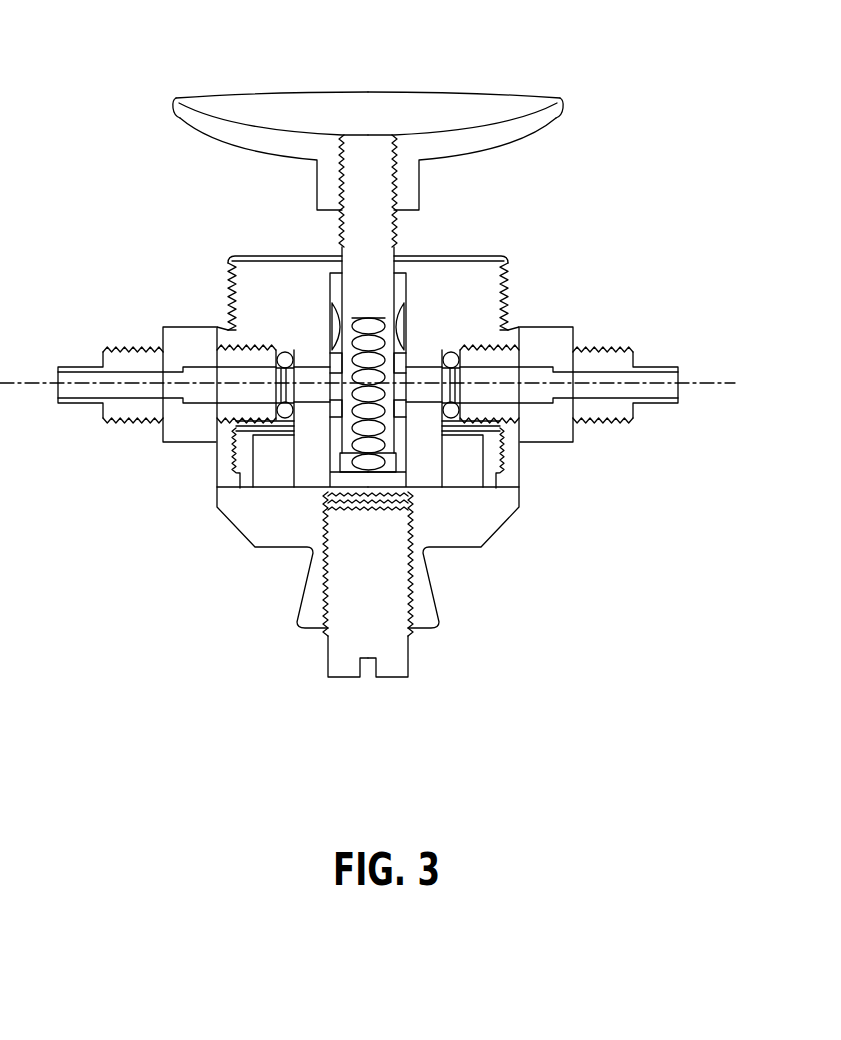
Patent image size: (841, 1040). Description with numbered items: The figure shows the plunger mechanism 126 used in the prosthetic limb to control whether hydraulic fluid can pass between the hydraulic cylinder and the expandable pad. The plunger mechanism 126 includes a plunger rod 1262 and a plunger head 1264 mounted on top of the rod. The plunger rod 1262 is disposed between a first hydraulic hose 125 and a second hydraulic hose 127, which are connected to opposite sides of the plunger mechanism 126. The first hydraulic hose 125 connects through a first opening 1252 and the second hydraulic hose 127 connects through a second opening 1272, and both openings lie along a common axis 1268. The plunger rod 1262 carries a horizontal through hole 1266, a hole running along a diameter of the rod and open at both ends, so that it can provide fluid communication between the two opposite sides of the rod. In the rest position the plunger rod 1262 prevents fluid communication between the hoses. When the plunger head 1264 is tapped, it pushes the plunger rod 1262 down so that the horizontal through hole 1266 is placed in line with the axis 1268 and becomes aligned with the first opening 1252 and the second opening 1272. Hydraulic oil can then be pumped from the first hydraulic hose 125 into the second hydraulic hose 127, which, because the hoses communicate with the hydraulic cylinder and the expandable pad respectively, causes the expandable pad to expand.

The plunger head 1264 is at (558, 106).
The plunger rod 1262 is at (342, 223).
The plunger mechanism 126 is at (497, 205).
The horizontal through hole 1266 is at (416, 337).
The axis 1268 is at (723, 382).
The first hydraulic hose 125 is at (125, 398).
The second hydraulic hose 127 is at (593, 398).
The first opening 1252 is at (318, 398).
The second opening 1272 is at (416, 402).